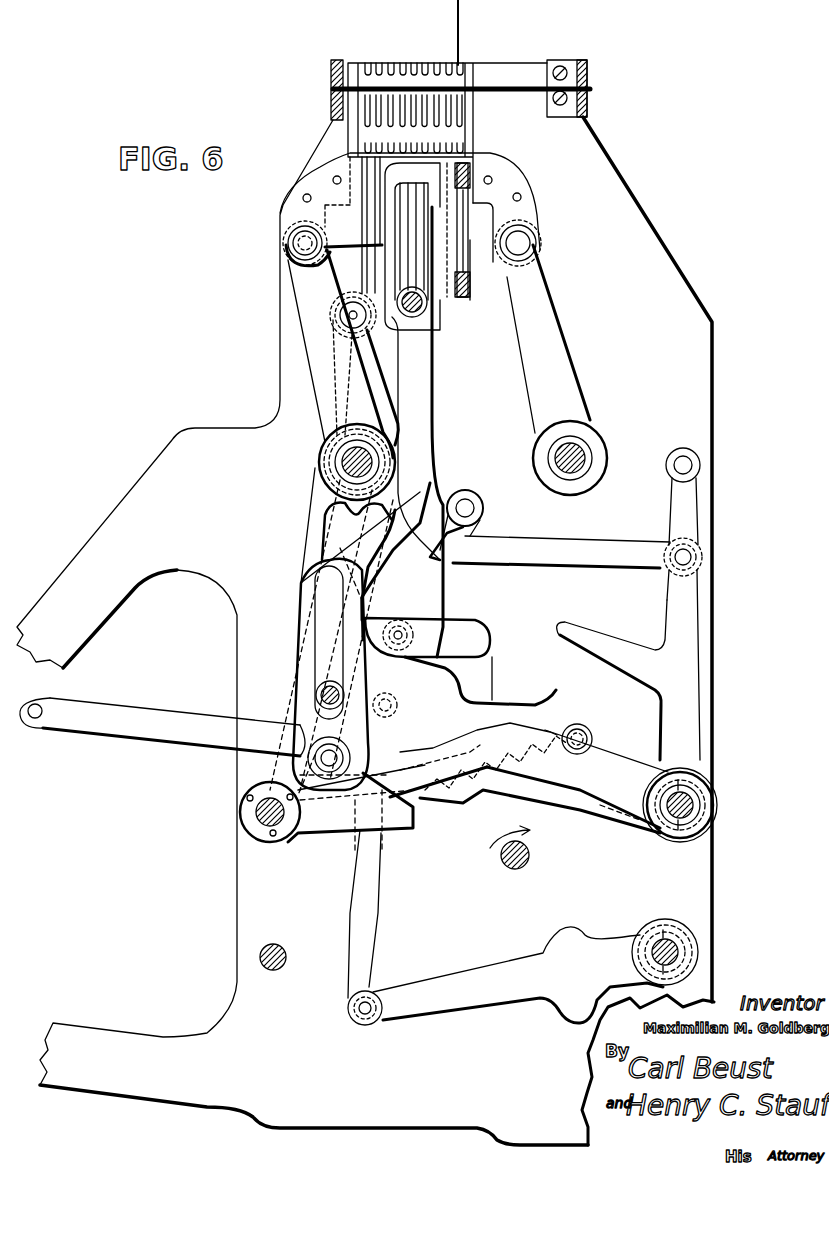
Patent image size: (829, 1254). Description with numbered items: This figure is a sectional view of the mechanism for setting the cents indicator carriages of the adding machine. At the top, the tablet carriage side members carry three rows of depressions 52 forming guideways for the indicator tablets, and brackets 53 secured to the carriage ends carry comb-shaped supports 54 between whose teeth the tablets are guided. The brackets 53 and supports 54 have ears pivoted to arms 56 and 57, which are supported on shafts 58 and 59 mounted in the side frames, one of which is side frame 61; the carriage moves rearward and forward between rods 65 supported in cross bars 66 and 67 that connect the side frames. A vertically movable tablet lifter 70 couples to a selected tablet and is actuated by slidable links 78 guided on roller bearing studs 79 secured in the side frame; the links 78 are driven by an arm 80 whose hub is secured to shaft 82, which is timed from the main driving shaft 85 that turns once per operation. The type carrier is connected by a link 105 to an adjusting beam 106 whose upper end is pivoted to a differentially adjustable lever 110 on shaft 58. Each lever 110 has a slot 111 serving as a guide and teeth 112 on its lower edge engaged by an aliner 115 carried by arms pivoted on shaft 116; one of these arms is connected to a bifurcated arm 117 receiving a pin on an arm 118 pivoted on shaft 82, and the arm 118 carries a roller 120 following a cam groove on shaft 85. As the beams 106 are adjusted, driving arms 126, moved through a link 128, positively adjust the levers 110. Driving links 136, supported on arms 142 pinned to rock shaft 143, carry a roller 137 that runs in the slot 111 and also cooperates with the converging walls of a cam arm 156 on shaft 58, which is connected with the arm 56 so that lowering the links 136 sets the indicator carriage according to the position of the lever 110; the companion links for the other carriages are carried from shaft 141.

The depressions 52 is at (458, 65).
The brackets 53 is at (503, 178).
The comb-shaped supports 54 is at (477, 247).
The arm 56 is at (312, 312).
The arm 57 is at (550, 317).
The shaft 58 is at (343, 460).
The shaft 59 is at (578, 458).
The side frame 61 is at (698, 428).
The rods 65 is at (493, 85).
The cross bar 66 is at (583, 62).
The cross bar 67 is at (331, 78).
The tablet lifter 70 is at (462, 225).
The slidable links 78 is at (420, 407).
The roller bearing studs 79 is at (424, 304).
The arm 80 is at (597, 790).
The shaft 82 is at (675, 823).
The main driving shaft 85 is at (530, 865).
The links 105 is at (165, 713).
The adjusting beams 106 is at (383, 388).
The differentially adjustable levers 110 is at (366, 363).
The slot 111 is at (405, 575).
The teeth 112 is at (553, 723).
The aliner 115 is at (413, 820).
The shaft 116 is at (267, 817).
The arm 117 is at (333, 810).
The arm 118 is at (515, 788).
The roller 120 is at (582, 732).
The driving arms 126 is at (677, 605).
The link 128 is at (607, 548).
The driving links 136 is at (368, 877).
The roller 137 is at (440, 630).
The shaft 141 is at (275, 960).
The arms 142 is at (487, 977).
The rock shaft 143 is at (665, 943).
The cam arm 156 is at (312, 527).